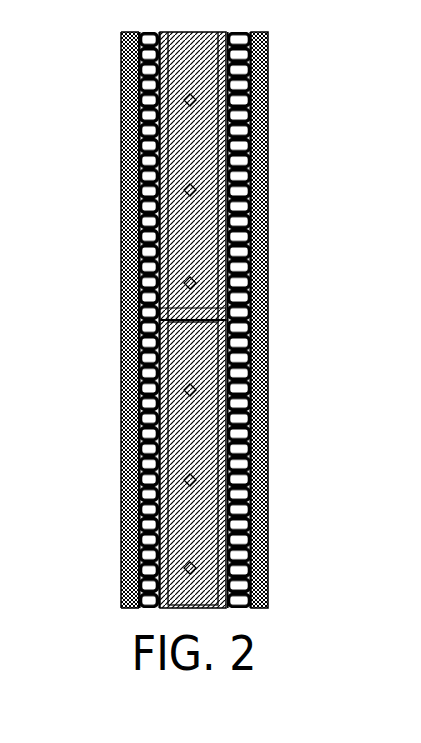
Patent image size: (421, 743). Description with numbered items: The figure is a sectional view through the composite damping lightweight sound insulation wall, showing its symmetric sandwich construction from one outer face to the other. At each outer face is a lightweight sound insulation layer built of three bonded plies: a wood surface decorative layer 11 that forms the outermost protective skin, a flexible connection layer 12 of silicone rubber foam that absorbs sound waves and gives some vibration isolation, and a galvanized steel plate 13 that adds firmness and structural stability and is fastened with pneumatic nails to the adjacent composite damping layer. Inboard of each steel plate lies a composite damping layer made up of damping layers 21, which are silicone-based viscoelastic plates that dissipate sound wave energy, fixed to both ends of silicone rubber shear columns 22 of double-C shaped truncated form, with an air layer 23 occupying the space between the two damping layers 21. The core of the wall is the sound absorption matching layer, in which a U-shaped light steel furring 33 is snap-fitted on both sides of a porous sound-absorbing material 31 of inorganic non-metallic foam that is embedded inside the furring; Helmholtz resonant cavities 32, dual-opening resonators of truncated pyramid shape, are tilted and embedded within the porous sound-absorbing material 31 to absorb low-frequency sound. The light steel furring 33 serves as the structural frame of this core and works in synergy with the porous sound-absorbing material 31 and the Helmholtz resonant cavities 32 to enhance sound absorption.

The surface decorative layer 11 is at (262, 96).
The flexible connection layer 12 is at (258, 166).
The galvanized steel plate 13 is at (255, 250).
The damping layer 21 is at (135, 258).
The shear column 22 is at (135, 87).
The air layer 23 is at (132, 152).
The porous sound-absorbing material 31 is at (138, 533).
The Helmholtz resonant cavity 32 is at (210, 483).
The light steel furring 33 is at (138, 334).